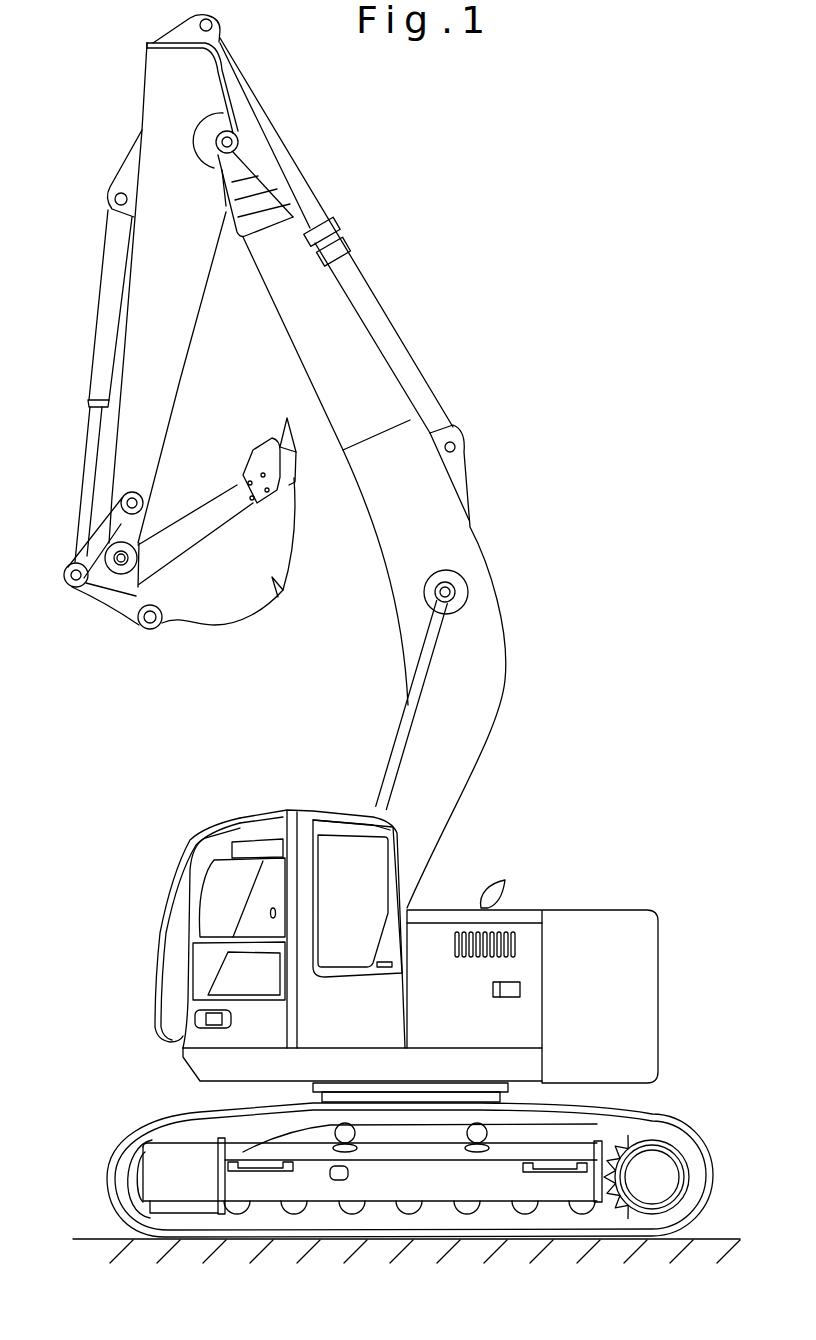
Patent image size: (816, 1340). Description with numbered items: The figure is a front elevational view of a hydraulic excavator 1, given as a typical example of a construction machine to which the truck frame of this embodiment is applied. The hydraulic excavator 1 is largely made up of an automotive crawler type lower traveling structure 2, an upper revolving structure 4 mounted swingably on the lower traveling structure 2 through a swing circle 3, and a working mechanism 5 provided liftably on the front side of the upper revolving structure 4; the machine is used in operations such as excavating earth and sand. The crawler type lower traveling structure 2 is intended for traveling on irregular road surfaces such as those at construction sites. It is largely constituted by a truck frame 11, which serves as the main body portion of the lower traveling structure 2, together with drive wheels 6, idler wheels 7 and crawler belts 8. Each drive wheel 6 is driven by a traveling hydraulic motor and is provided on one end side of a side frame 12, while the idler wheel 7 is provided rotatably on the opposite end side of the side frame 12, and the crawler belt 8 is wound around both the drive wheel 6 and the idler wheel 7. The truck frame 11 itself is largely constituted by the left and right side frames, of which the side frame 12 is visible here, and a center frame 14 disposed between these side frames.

The hydraulic excavator 1 is at (603, 522).
The crawler type lower traveling structure 2 is at (118, 1133).
The swing circle 3 is at (493, 1083).
The upper revolving structure 4 is at (528, 903).
The working mechanism 5 is at (368, 388).
The drive wheel 6 is at (665, 1176).
The idler wheel 7 is at (138, 1177).
The crawler belt 8 is at (649, 1132).
The truck frame 11 is at (322, 1210).
The left side frame 12 is at (530, 1188).
The center frame 14 is at (437, 1135).